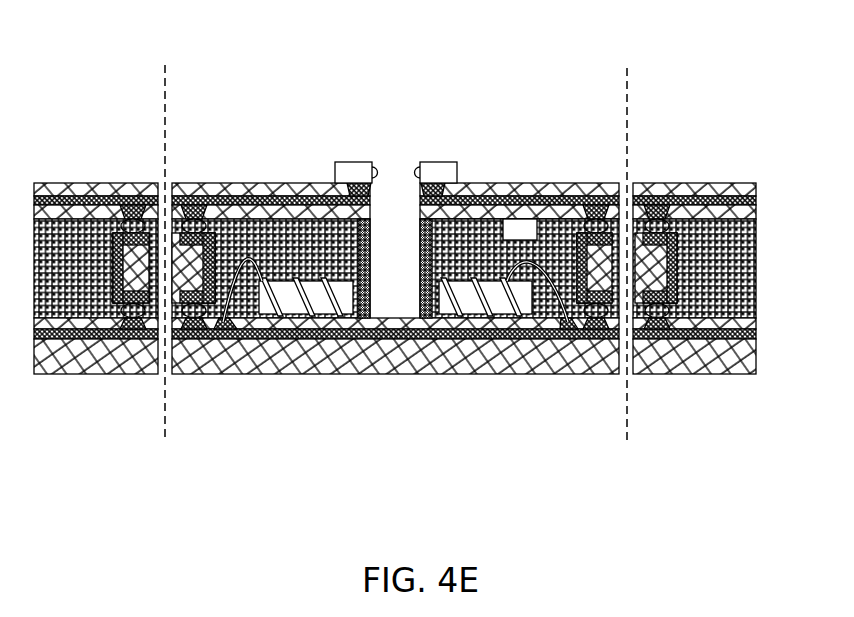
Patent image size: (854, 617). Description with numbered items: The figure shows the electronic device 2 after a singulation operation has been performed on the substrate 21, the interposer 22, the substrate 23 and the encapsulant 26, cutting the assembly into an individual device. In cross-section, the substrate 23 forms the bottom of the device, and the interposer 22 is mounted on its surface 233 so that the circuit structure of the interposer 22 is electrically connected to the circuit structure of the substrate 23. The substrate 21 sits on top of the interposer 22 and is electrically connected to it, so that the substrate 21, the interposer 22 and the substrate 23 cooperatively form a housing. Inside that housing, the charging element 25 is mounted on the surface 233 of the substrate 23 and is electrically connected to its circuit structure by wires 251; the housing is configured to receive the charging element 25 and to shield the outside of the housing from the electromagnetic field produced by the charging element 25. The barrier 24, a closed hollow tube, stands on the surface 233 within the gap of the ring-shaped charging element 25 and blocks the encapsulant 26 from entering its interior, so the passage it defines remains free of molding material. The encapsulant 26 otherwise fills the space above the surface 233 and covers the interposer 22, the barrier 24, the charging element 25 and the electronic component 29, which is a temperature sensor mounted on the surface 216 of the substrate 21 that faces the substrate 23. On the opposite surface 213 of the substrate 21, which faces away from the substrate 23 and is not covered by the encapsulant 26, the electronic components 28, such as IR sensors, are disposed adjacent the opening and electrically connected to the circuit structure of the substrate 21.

The electronic device 2 is at (558, 66).
The substrate 21 is at (587, 190).
The surface 213 is at (540, 186).
The surface 216 is at (483, 226).
The interposer 22 is at (655, 262).
The substrate 23 is at (720, 355).
The surface 233 is at (702, 317).
The barrier 24 is at (362, 320).
The charging element 25 is at (477, 306).
The wires 251 is at (550, 309).
The encapsulant 26 is at (720, 272).
The electronic component 28 is at (345, 168).
The electronic component 29 is at (517, 226).